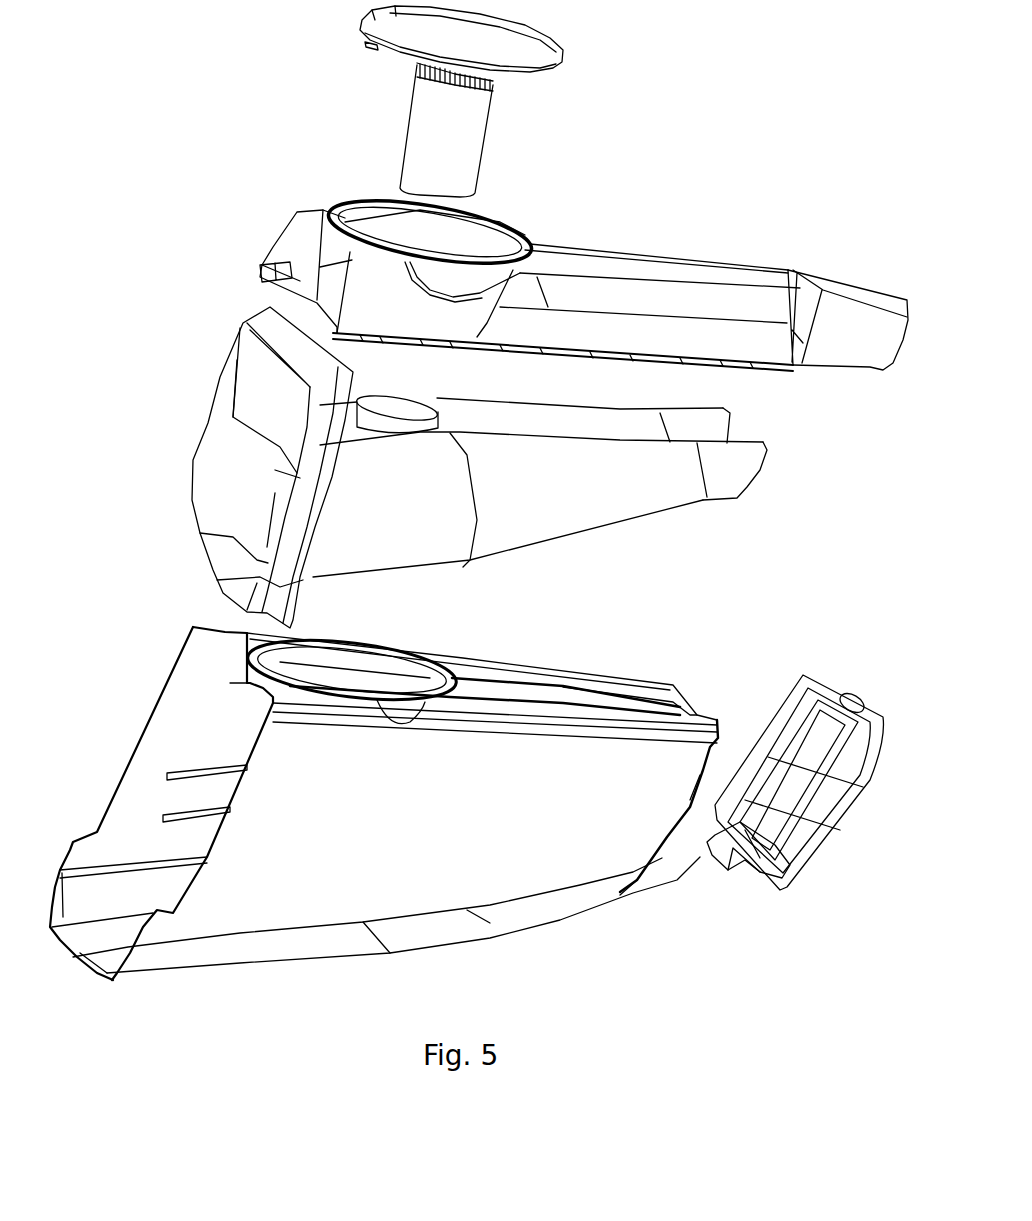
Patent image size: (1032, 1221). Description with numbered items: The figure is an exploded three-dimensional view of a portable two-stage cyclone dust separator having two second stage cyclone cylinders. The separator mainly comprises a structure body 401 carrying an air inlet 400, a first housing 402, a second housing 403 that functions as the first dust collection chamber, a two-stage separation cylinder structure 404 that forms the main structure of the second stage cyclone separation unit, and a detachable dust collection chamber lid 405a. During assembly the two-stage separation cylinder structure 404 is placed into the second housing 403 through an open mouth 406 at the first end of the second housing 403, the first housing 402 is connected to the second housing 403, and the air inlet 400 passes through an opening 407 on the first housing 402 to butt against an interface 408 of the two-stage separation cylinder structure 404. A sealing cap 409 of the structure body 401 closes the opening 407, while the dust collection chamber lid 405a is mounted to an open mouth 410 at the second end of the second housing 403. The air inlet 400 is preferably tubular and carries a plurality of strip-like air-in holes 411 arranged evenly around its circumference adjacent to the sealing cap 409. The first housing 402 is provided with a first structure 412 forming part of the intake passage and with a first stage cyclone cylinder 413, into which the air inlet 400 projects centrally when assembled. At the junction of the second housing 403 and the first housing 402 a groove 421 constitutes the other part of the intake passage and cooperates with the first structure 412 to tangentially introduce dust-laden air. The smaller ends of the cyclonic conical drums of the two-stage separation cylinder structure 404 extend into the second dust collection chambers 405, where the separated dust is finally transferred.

The air inlet 400 is at (448, 124).
The structure body 401 is at (413, 105).
The first housing 402 is at (557, 257).
The second housing 403 is at (411, 809).
The two-stage separation cylinder structure 404 is at (581, 471).
The second dust collection chambers 405 is at (743, 473).
The dust collection chamber lid 405a is at (842, 780).
The open mouth 406 is at (155, 762).
The opening 407 is at (385, 233).
The interface 408 is at (413, 400).
The sealing cap 409 is at (543, 55).
The open mouth 410 is at (677, 835).
The air-in holes 411 is at (490, 87).
The first structure 412 is at (850, 333).
The first stage cyclone cylinder 413 is at (327, 278).
The groove 421 is at (630, 675).